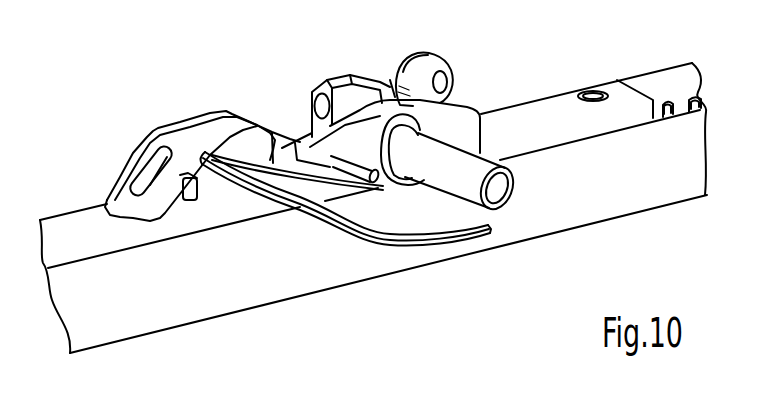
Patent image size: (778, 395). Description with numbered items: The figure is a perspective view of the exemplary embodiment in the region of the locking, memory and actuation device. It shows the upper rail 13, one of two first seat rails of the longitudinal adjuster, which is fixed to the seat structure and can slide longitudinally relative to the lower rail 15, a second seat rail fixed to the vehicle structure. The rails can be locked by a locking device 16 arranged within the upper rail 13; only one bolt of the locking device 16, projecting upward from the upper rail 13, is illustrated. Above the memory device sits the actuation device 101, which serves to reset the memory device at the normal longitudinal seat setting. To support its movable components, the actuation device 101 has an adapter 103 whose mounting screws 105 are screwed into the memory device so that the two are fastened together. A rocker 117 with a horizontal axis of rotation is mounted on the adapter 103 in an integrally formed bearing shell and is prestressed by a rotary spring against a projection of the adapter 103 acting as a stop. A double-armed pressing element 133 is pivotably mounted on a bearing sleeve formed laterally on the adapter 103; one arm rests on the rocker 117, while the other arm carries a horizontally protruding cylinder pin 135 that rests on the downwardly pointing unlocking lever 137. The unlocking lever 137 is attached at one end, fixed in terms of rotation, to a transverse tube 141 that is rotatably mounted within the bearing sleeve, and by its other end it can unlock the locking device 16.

The upper rail 13 is at (553, 117).
The lower rail 15 is at (598, 192).
The locking device 16 is at (193, 200).
The actuation device 101 is at (478, 82).
The adapter 103 is at (332, 84).
The mounting screws 105 is at (200, 6).
The rocker 117 is at (441, 72).
The pressing element 133 is at (308, 170).
The cylinder pin 135 is at (358, 178).
The unlocking lever 137 is at (422, 215).
The transverse tube 141 is at (466, 178).